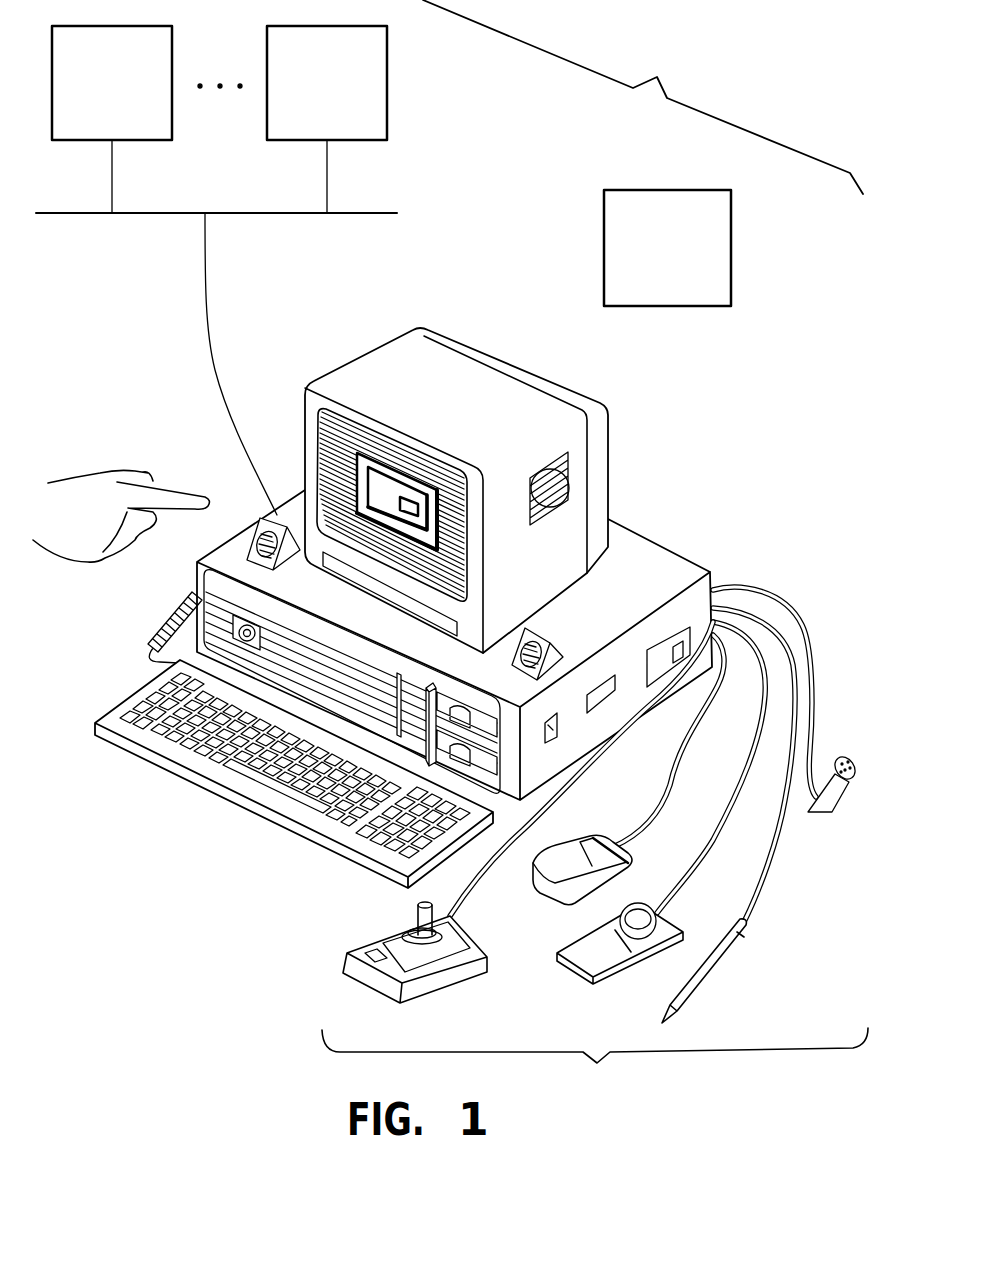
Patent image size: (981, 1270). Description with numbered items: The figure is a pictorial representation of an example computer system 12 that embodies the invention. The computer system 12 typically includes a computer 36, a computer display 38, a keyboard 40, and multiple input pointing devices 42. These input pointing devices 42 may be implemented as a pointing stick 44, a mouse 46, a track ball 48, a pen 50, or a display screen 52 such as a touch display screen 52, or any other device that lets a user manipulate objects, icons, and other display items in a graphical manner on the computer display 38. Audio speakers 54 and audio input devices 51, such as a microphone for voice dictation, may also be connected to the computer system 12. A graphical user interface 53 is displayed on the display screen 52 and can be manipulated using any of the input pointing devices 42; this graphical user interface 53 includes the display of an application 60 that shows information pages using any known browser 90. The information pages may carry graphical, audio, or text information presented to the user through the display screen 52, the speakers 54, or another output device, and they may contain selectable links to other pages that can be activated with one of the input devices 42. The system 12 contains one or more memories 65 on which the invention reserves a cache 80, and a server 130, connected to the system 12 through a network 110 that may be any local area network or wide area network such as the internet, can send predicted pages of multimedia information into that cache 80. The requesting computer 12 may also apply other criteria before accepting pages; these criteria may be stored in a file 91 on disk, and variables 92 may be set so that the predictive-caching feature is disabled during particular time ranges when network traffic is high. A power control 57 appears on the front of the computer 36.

The server 130 is at (219, 119).
The network 110 is at (228, 213).
The computer system 12 is at (190, 378).
The computer 36 is at (547, 765).
The computer display 38 is at (603, 450).
The keyboard 40 is at (330, 815).
The input pointing devices 42 is at (595, 1062).
The pointing stick 44 is at (427, 982).
The mouse 46 is at (547, 892).
The track ball 48 is at (577, 967).
The pen 50 is at (718, 970).
The audio input devices 51 is at (260, 517).
The display screen 52 is at (330, 480).
The graphical user interface 53 is at (340, 414).
The audio speakers 54 is at (542, 636).
The power switch 57 is at (232, 612).
The application 60 is at (363, 455).
The memories 65 is at (711, 597).
The cache 80 is at (678, 648).
The browser 90 is at (600, 697).
The file 91 is at (557, 720).
The variables 92 is at (553, 730).